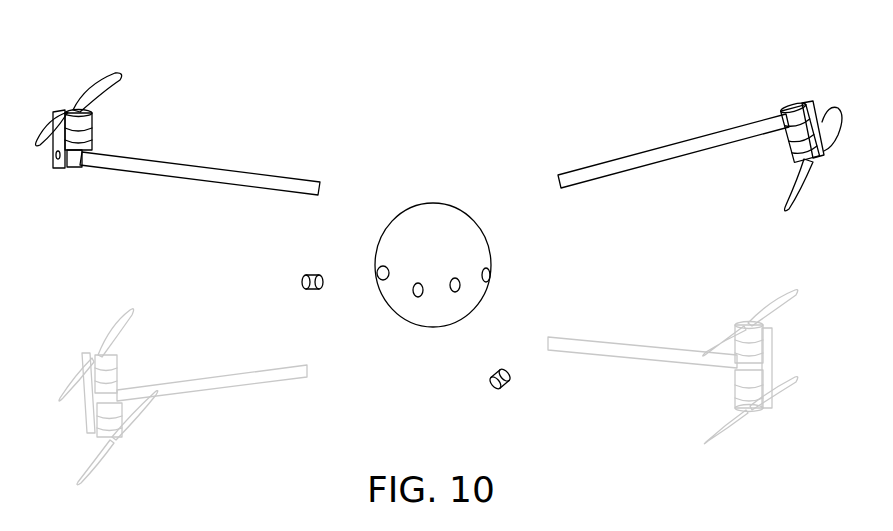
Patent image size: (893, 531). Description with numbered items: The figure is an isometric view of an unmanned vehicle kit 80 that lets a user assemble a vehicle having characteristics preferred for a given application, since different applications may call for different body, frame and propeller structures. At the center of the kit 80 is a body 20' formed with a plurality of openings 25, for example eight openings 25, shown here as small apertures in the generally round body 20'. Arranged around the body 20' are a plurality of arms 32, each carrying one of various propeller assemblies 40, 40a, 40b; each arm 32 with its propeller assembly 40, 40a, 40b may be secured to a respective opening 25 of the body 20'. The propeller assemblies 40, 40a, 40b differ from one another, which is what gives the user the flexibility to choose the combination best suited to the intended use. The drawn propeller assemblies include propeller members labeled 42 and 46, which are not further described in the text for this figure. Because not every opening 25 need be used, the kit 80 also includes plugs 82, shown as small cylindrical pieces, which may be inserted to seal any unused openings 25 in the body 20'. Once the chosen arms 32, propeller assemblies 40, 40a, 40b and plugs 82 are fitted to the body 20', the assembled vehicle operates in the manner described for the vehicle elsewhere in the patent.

The body 20' is at (435, 241).
The openings 25 is at (379, 278).
The arms 32 is at (257, 172).
The propeller assembly 40 is at (73, 424).
The propeller assembly 40a is at (59, 91).
The propeller assembly 40b is at (826, 94).
The upper propeller 42 is at (100, 80).
The lower propeller 46 is at (807, 193).
The unmanned vehicle kit 80 is at (324, 61).
The plugs 82 is at (313, 276).